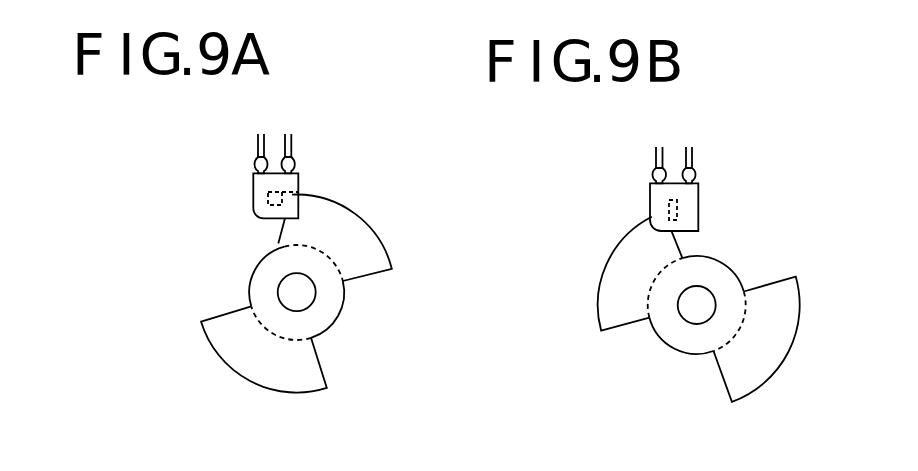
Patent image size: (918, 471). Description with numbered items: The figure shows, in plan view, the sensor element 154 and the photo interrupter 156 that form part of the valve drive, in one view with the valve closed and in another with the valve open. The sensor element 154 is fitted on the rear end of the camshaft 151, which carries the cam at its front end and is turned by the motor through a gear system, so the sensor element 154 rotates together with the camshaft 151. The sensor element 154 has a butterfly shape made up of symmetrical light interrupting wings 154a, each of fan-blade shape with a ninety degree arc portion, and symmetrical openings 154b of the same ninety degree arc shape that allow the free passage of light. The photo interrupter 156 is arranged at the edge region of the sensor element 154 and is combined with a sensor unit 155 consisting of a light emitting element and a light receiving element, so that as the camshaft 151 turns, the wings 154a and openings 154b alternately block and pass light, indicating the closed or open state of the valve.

In FIG. 9A, the camshaft 151 is at (293, 293).
In FIG. 9B, the camshaft 151 is at (690, 305).
In FIG. 9A, the sensor element 154 is at (236, 251).
In FIG. 9B, the sensor element 154 is at (584, 247).
In FIG. 9A, the light interrupting wings 154a is at (253, 363).
In FIG. 9B, the light interrupting wings 154a is at (735, 363).
In FIG. 9A, the openings 154b is at (203, 310).
In FIG. 9B, the openings 154b is at (651, 343).
In FIG. 9A, the sensor unit 155 is at (268, 200).
In FIG. 9B, the sensor unit 155 is at (668, 203).
In FIG. 9A, the photo interrupter 156 is at (265, 180).
In FIG. 9B, the photo interrupter 156 is at (651, 185).